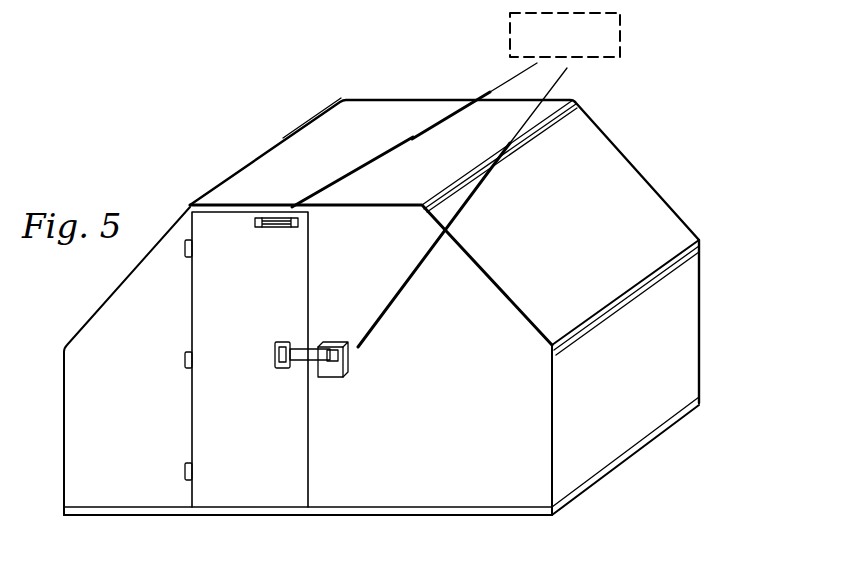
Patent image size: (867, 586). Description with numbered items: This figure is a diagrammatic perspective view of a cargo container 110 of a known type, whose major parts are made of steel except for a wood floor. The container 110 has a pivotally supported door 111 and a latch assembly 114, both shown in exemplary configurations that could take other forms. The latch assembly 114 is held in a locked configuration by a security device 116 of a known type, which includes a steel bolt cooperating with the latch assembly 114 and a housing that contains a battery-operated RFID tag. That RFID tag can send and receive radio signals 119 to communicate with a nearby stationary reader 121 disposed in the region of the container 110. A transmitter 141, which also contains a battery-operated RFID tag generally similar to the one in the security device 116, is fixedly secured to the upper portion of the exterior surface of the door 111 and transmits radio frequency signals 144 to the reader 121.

The cargo container 110 is at (287, 165).
The door 111 is at (260, 495).
The latch assembly 114 is at (303, 352).
The security device 116 is at (333, 379).
The radio signals 119 is at (482, 188).
The stationary reader 121 is at (621, 35).
The transmitter 141 is at (277, 227).
The radio frequency signals 144 is at (489, 93).